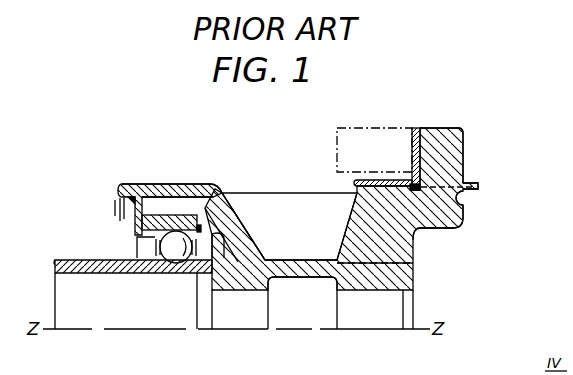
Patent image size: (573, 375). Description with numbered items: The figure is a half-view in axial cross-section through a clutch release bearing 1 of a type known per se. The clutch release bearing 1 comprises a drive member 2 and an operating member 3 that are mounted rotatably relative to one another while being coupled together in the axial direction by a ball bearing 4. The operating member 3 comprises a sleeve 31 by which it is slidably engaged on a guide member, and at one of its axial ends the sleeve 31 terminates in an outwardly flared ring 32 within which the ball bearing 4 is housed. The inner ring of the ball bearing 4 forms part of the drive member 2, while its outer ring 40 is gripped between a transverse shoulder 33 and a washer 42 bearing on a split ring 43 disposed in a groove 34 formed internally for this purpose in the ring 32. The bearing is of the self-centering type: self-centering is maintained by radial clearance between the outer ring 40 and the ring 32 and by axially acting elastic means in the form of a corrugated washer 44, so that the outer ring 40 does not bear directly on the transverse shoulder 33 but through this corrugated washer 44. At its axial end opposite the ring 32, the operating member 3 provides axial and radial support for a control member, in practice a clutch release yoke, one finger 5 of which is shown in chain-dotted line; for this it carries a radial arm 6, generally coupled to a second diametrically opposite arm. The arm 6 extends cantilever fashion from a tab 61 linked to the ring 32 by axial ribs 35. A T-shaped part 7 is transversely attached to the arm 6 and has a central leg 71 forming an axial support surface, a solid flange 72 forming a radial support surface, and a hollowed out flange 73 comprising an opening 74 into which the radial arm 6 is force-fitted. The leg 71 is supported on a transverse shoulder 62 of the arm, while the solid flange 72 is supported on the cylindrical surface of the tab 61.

The clutch release bearing 1 is at (72, 291).
The drive member 2 is at (64, 247).
The operating member 3 is at (420, 268).
The ball bearing 4 is at (195, 198).
The finger 5 is at (337, 155).
The radial arm 6 is at (470, 121).
The T-shaped part 7 is at (496, 187).
The sleeve 31 is at (302, 278).
The outwardly flared ring 32 is at (143, 184).
The transverse shoulder 33 is at (213, 191).
The groove 34 is at (124, 194).
The axial ribs 35 is at (306, 229).
The outer ring 40 is at (163, 190).
The washer 42 is at (135, 235).
The split ring 43 is at (133, 207).
The corrugated washer 44 is at (217, 214).
The tab 61 is at (430, 237).
The transverse shoulder 62 is at (416, 134).
The central leg 71 is at (383, 178).
The solid flange 72 is at (376, 178).
The hollowed out flange 73 is at (480, 184).
The opening 74 is at (468, 199).